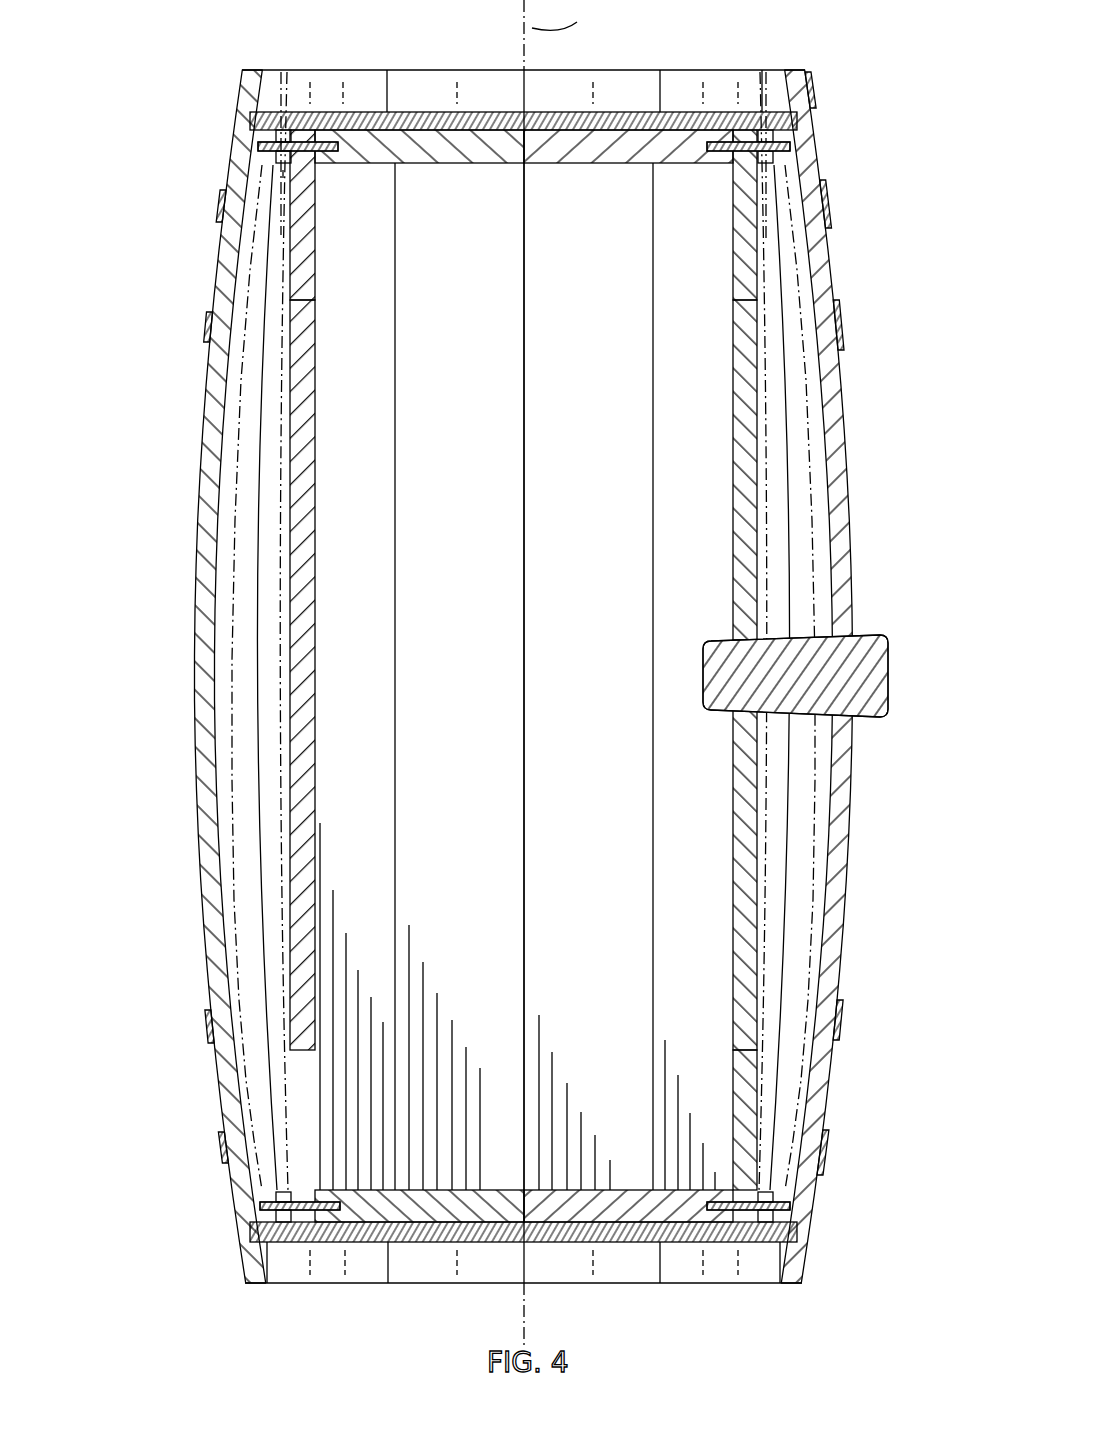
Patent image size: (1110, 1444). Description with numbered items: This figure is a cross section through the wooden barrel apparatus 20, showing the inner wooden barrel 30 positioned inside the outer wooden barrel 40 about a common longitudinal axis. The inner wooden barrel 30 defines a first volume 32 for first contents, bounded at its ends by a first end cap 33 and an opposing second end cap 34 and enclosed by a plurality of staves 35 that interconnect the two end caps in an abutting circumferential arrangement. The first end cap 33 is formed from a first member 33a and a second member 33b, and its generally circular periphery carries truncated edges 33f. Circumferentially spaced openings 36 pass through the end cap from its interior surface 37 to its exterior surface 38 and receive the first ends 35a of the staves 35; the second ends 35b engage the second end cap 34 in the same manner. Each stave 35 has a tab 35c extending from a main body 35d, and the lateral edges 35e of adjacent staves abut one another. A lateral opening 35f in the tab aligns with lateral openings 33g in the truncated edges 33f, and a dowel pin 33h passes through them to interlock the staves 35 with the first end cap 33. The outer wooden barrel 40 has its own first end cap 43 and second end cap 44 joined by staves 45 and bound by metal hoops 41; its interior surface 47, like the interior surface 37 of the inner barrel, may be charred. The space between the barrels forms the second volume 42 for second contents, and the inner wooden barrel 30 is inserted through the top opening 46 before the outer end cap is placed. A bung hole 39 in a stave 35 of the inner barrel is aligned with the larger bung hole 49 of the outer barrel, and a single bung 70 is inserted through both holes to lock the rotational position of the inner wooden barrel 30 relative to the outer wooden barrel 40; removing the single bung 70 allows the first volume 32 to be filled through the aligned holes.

The wooden barrel apparatus 20 is at (122, 82).
The inner wooden barrel 30 is at (266, 418).
The first volume 32 is at (435, 290).
The first end cap 33 is at (599, 170).
The first member 33a is at (490, 160).
The second member 33b is at (562, 160).
The truncated edge 33f is at (775, 150).
The lateral opening 33g is at (270, 150).
The dowel pin 33h is at (300, 142).
The second end cap 34 is at (616, 1183).
The staves 35 is at (590, 832).
The first end 35a is at (706, 176).
The second end 35b is at (717, 1173).
The tab 35c is at (750, 140).
The main body 35d is at (456, 498).
The lateral edges 35e is at (518, 615).
The lateral opening 35f is at (318, 165).
The openings 36 is at (285, 181).
The interior surface 37 is at (600, 287).
The exterior surface 38 is at (763, 295).
The bung hole 39 is at (736, 640).
The outer wooden barrel 40 is at (234, 80).
The metal hoops 41 is at (812, 90).
The second volume 42 is at (248, 250).
The first end cap 43 is at (369, 110).
The second end cap 44 is at (361, 1234).
The staves 45 is at (829, 289).
The top opening 46 is at (714, 67).
The interior surface 47 is at (232, 655).
The bung hole 49 is at (838, 640).
The single bung 70 is at (882, 680).